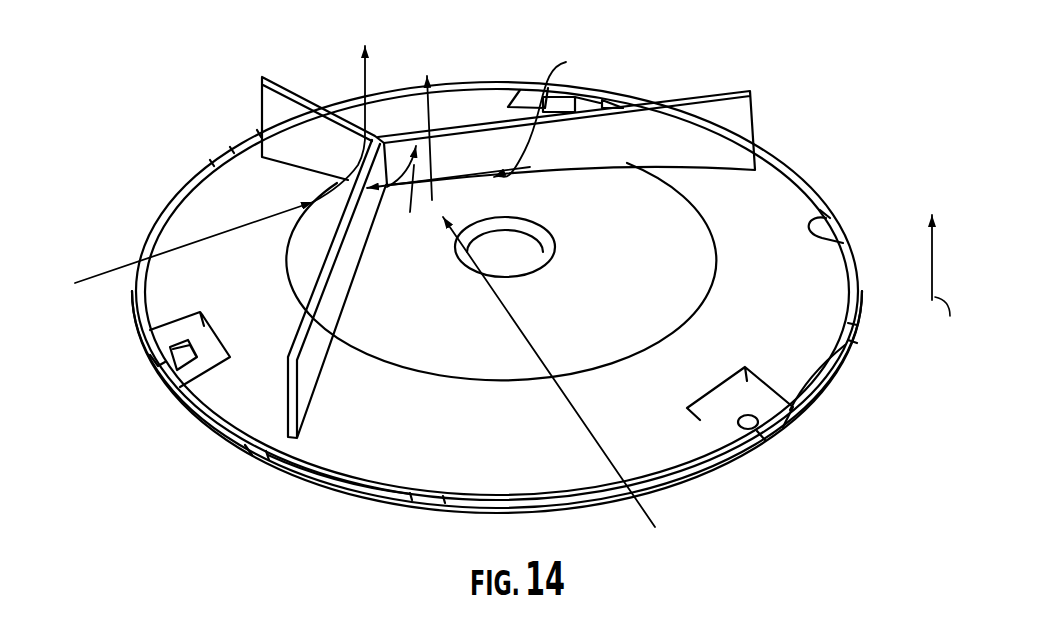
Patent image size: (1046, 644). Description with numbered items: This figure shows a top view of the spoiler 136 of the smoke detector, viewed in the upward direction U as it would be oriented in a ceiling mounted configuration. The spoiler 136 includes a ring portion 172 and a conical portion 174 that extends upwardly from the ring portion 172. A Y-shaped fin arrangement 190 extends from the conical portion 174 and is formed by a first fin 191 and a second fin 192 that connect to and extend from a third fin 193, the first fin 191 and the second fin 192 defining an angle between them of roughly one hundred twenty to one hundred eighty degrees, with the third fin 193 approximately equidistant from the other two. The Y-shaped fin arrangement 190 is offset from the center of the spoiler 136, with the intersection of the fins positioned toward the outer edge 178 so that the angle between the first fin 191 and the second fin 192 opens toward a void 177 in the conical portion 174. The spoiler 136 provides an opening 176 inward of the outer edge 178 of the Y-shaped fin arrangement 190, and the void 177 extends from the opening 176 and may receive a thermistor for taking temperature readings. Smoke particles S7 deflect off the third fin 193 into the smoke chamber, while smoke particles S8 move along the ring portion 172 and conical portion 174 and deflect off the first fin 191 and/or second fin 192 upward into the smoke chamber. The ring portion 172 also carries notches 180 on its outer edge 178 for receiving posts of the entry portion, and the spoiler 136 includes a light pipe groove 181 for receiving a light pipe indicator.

The spoiler 136 is at (502, 290).
The ring portion 172 is at (170, 203).
The conical portion 174 is at (450, 431).
The opening 176 is at (516, 119).
The void 177 is at (525, 263).
The outer edge 178 is at (833, 384).
The notches 180 is at (260, 458).
The light pipe groove 181 is at (828, 216).
The Y-shaped fin arrangement 190 is at (472, 237).
The first fin 191 is at (703, 120).
The second fin 192 is at (287, 373).
The third fin 193 is at (299, 125).
The smoke particles S7 is at (177, 256).
The smoke particles S8 is at (556, 391).
The upward direction U is at (947, 281).